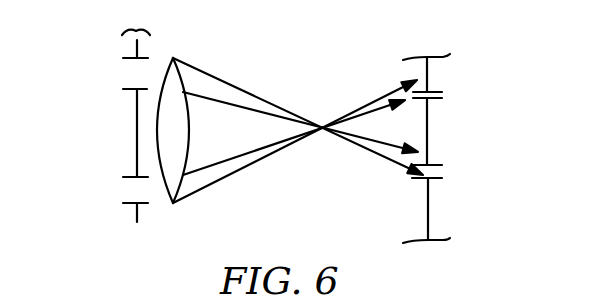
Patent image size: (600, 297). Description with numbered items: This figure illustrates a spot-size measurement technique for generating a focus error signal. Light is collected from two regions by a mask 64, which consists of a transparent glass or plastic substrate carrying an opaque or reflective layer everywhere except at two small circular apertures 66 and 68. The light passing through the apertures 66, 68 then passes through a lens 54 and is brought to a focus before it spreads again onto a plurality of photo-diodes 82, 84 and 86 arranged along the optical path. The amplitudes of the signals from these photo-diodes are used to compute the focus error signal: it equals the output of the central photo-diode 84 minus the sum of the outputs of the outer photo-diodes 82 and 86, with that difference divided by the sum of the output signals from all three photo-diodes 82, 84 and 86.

The lens 54 is at (173, 205).
The mask 64 is at (134, 29).
The aperture 66 is at (137, 70).
The aperture 68 is at (137, 188).
The photo-diode 82 is at (427, 82).
The photo-diode 84 is at (427, 120).
The photo-diode 86 is at (428, 207).